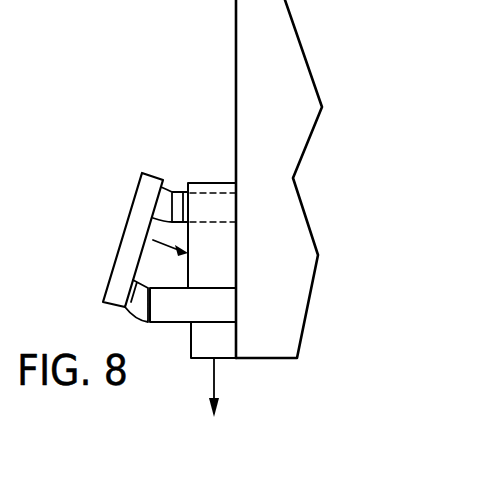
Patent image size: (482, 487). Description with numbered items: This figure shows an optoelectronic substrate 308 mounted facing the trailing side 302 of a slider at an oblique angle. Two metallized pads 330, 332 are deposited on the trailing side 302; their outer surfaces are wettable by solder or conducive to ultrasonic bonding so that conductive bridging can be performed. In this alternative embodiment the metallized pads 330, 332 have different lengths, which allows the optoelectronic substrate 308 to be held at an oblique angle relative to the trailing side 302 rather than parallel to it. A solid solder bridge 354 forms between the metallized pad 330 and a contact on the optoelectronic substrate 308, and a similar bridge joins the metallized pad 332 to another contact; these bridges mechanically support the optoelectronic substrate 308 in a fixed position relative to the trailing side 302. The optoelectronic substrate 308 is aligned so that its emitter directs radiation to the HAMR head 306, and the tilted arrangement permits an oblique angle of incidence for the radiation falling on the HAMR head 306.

The trailing side 302 is at (236, 62).
The HAMR head 306 is at (225, 360).
The optoelectronic substrate 308 is at (137, 184).
The metallized pad 330 is at (182, 190).
The metallized pad 332 is at (168, 323).
The solder bridge 354 is at (165, 221).